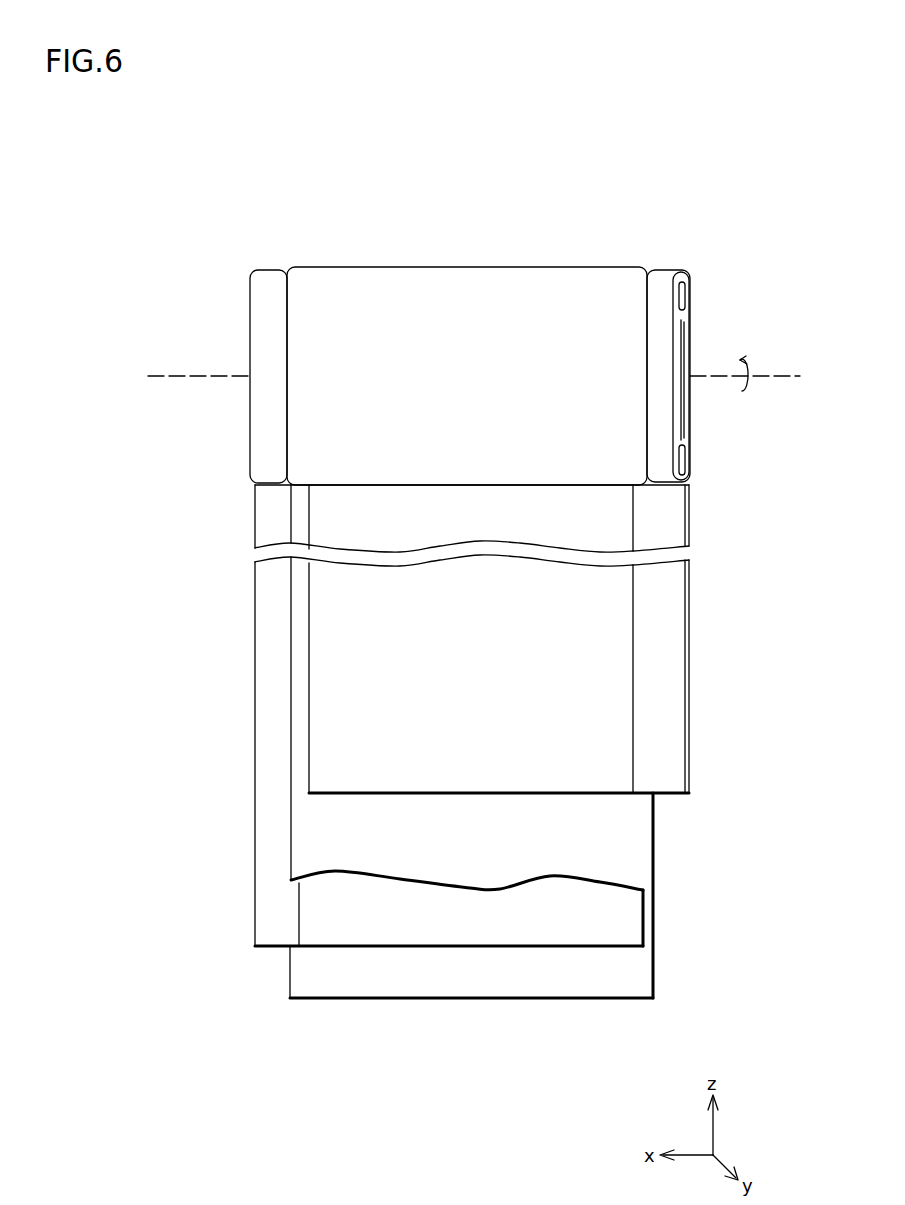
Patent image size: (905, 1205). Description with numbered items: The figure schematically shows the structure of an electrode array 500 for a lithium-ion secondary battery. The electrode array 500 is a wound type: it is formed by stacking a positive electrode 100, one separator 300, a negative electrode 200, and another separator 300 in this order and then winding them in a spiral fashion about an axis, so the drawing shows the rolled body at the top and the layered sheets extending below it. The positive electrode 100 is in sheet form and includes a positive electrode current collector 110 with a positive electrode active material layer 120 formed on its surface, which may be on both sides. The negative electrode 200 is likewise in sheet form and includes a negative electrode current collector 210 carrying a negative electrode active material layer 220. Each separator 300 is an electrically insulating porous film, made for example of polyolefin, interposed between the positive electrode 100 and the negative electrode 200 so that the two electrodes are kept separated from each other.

The electrode array 500 is at (229, 220).
The positive electrode 100 is at (803, 570).
The positive electrode current collector 110 is at (672, 668).
The positive electrode active material layer 120 is at (624, 618).
The negative electrode 200 is at (122, 781).
The negative electrode current collector 210 is at (256, 837).
The negative electrode active material layer 220 is at (340, 925).
The separator 300 is at (648, 850).